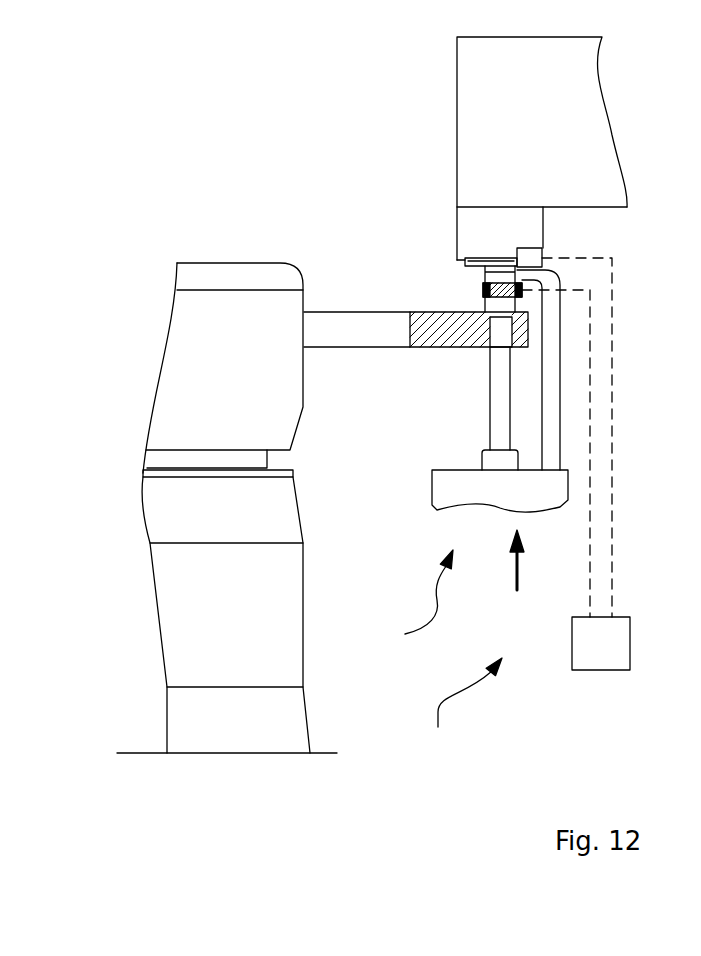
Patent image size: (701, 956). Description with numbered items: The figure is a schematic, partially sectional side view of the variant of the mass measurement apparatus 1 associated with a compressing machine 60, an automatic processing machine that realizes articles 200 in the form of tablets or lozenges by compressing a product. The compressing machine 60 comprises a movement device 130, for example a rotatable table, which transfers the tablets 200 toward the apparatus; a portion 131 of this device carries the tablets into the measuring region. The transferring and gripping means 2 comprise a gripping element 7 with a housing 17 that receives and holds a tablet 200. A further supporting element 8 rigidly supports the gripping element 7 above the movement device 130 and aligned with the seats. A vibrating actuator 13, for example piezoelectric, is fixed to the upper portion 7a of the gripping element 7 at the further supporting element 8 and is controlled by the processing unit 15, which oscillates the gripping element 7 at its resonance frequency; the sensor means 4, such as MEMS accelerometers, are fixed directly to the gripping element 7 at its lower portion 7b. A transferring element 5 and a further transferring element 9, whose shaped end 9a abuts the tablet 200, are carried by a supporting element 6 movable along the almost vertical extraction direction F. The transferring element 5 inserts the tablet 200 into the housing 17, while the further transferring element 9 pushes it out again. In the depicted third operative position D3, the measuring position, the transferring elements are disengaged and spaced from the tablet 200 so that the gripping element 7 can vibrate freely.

The compressing machine 60 is at (150, 186).
The movement device 130 is at (222, 312).
The robot arm bar 131 is at (332, 332).
The article 200 is at (420, 345).
The gripping element 7 is at (483, 293).
The upper portion of the gripping element 7a is at (488, 328).
The lower portion of the gripping element 7b is at (490, 262).
The further supporting element 8 is at (528, 230).
The further transferring element 9 is at (552, 408).
The shaped end 9a is at (503, 262).
The vibrating actuator 13 is at (537, 258).
The sensor means 4 is at (520, 292).
The housing 17 is at (487, 298).
The transferring element 5 is at (500, 432).
The supporting element 6 is at (473, 492).
The transferring and gripping means 2 is at (594, 442).
The processing unit 15 is at (600, 652).
The mass measurement apparatus 1 is at (467, 709).
The third operative position D3 is at (407, 601).
The extraction direction F is at (529, 560).